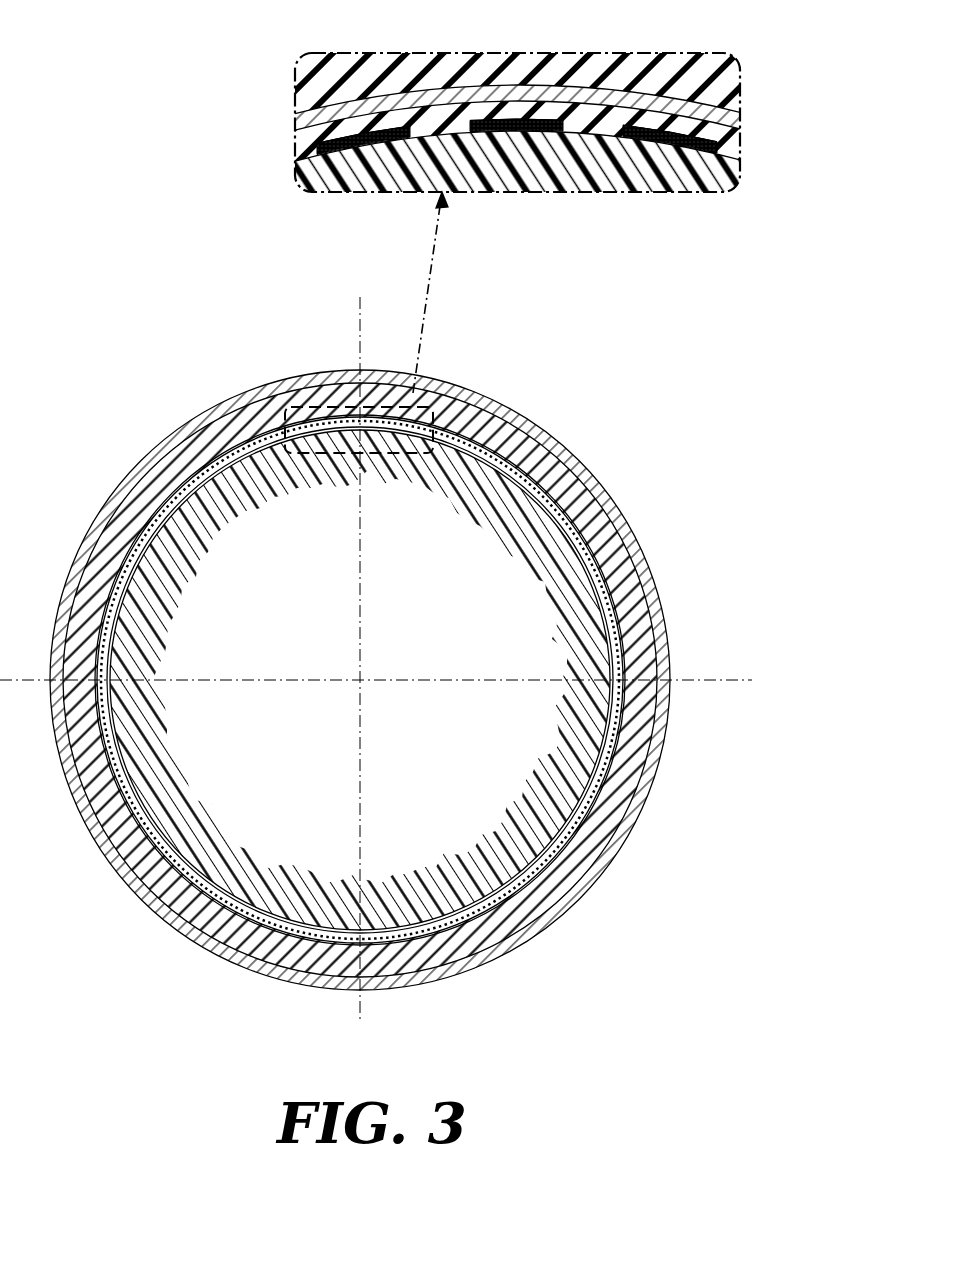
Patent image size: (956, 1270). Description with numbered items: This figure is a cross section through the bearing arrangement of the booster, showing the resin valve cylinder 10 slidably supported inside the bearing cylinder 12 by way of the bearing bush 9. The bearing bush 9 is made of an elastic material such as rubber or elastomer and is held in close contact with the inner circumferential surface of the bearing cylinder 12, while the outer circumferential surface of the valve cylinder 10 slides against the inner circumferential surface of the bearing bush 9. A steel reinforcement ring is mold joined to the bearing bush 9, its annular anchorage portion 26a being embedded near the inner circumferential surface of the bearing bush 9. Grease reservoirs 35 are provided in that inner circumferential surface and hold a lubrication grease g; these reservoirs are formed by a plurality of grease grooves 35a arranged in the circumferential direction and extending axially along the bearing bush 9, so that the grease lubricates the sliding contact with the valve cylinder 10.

The bearing bush 9 is at (530, 877).
The valve cylinder 10 is at (453, 493).
The bearing cylinder 12 is at (523, 427).
The annular anchorage portion 26a is at (617, 762).
The grease reservoir 35 is at (692, 153).
The grease groove 35a is at (488, 121).
The lubrication grease g is at (368, 152).